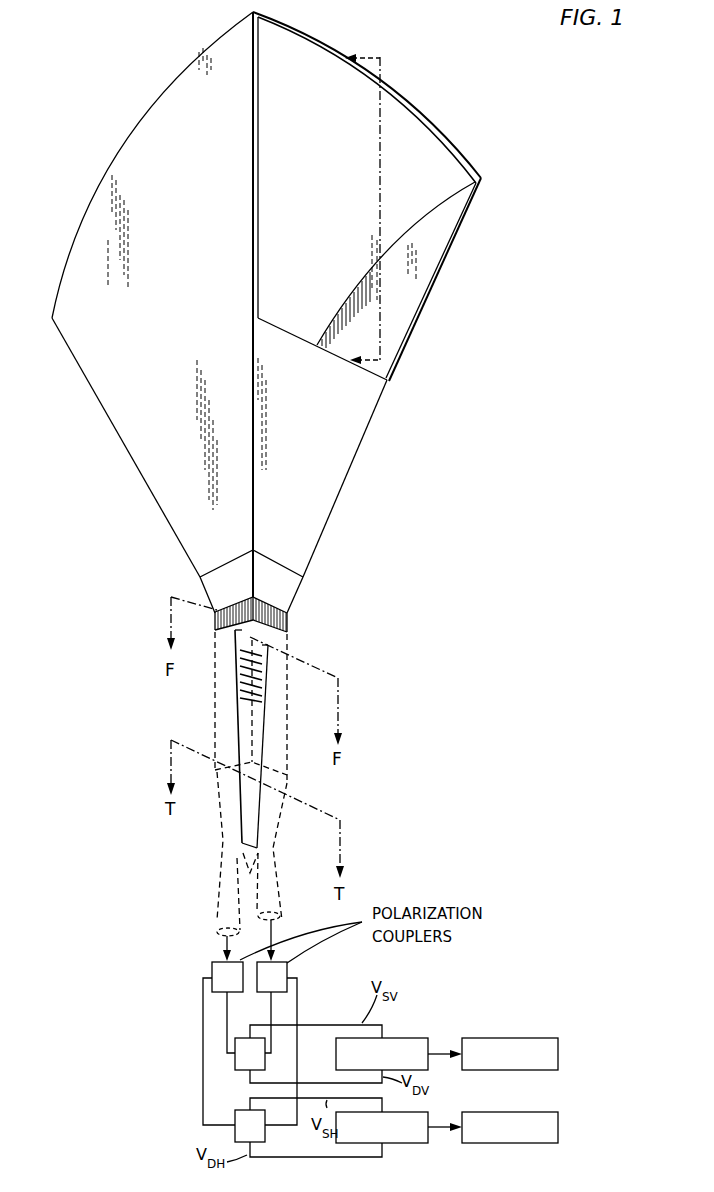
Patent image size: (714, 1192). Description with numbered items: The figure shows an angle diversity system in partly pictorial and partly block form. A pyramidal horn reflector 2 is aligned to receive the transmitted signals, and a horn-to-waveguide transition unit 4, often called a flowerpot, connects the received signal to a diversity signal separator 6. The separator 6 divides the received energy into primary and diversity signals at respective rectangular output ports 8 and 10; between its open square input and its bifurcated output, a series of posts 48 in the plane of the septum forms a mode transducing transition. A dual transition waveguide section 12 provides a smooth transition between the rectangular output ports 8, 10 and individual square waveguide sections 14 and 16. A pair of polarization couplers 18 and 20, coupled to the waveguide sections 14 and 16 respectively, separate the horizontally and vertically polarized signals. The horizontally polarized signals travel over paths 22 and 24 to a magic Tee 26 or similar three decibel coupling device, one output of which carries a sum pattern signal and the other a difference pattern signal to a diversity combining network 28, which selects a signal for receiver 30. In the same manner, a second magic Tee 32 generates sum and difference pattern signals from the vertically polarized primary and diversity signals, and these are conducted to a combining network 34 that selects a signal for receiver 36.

The pyramidal horn reflector 2 is at (337, 468).
The horn-to-waveguide transition unit 4 is at (288, 595).
The diversity signal separator 6 is at (273, 727).
The output port 8 is at (228, 778).
The output port 10 is at (262, 787).
The dual transition waveguide section 12 is at (268, 832).
The square waveguide section 14 is at (220, 905).
The square waveguide section 16 is at (273, 903).
The polarization coupler 18 is at (212, 965).
The polarization coupler 20 is at (287, 968).
The path 22 is at (203, 1012).
The path 24 is at (300, 1007).
The magic Tee 26 is at (235, 1127).
The diversity combining network 28 is at (412, 1145).
The receiver 30 is at (558, 1120).
The magic Tee 32 is at (235, 1064).
The combining network 34 is at (415, 1038).
The receiver 36 is at (530, 1038).
The posts 48 is at (278, 657).